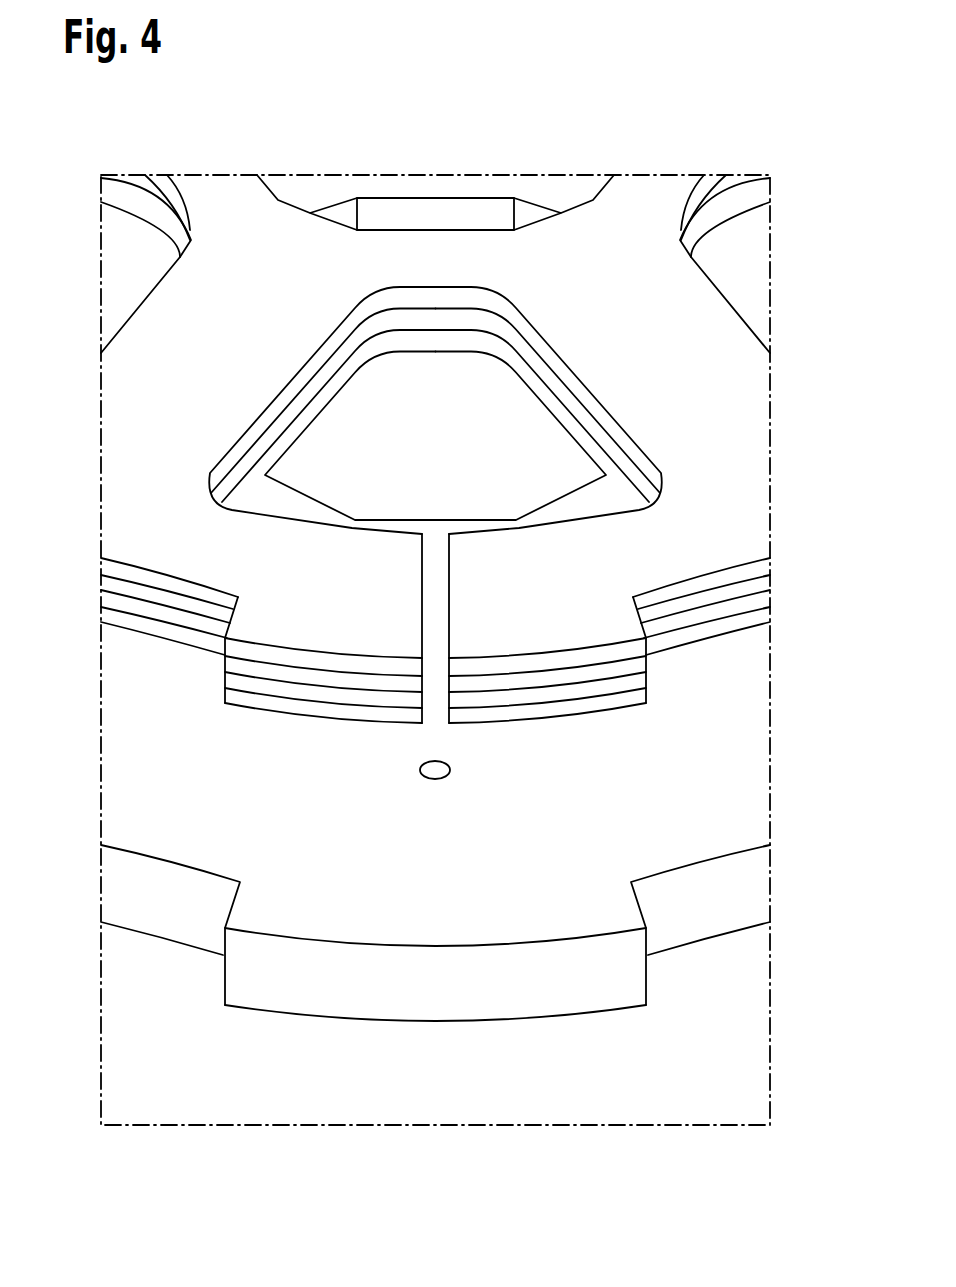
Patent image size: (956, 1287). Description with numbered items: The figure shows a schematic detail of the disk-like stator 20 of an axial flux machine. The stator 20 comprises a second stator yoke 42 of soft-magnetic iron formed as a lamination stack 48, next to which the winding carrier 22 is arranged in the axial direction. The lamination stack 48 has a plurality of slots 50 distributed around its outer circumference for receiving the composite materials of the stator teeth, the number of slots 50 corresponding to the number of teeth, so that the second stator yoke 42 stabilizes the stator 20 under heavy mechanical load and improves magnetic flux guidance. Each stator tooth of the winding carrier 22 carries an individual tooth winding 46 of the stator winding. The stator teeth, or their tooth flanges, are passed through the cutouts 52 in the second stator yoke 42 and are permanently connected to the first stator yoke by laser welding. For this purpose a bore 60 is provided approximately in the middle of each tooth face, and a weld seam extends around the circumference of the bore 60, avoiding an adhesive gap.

The stator 20 is at (786, 392).
The winding carrier 22 is at (435, 1024).
The individual tooth winding 46 is at (668, 828).
The second stator yoke 42 is at (388, 293).
The lamination stack 48 is at (125, 391).
The slot 50 is at (432, 578).
The cutout 52 is at (438, 372).
The bore 60 is at (420, 771).